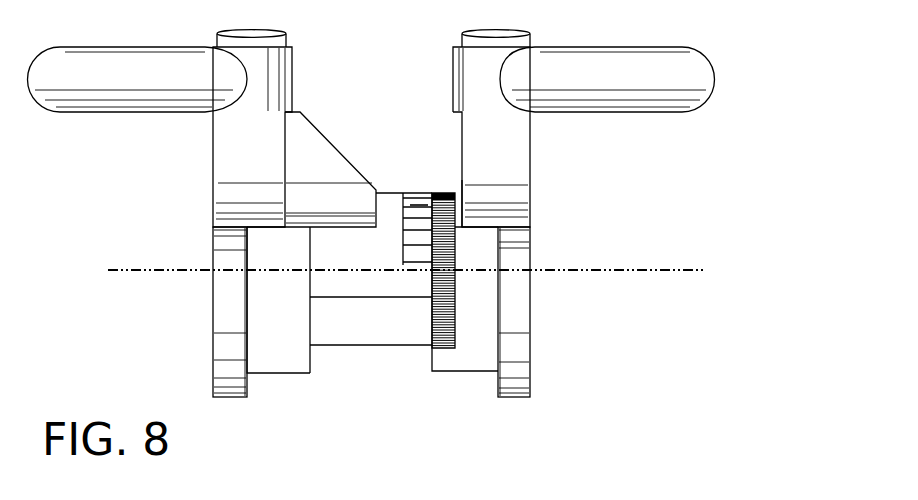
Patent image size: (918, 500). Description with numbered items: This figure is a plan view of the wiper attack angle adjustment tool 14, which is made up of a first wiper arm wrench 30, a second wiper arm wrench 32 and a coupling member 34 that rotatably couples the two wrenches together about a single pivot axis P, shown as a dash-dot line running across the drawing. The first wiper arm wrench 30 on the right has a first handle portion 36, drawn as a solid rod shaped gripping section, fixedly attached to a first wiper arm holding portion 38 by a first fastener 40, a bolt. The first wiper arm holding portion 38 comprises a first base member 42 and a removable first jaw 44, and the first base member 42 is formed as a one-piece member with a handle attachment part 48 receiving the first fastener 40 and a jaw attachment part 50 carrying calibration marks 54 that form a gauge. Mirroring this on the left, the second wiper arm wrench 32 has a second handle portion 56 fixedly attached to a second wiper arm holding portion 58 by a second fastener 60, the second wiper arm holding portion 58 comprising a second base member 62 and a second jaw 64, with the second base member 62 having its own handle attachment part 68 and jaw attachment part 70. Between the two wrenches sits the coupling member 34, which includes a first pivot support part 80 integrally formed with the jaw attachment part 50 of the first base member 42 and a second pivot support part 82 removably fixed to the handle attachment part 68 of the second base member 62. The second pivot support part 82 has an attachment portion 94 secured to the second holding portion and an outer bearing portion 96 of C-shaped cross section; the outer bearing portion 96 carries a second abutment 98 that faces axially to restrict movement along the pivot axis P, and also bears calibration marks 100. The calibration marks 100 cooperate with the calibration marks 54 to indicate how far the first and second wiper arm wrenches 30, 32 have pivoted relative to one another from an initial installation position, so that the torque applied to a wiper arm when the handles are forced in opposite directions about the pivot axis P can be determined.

The wiper attack angle adjustment tool 14 is at (676, 31).
The first wiper arm wrench 30 is at (562, 315).
The second wiper arm wrench 32 is at (186, 343).
The coupling member 34 is at (428, 412).
The first handle portion 36 is at (629, 114).
The first wiper arm holding portion 38 is at (565, 460).
The first fastener 40 is at (503, 29).
The first base member 42 is at (467, 379).
The first jaw 44 is at (516, 402).
The handle attachment part 48 is at (507, 165).
The jaw attachment part 50 is at (482, 238).
The calibration marks 54 is at (437, 192).
The second handle portion 56 is at (95, 114).
The second wiper arm holding portion 58 is at (284, 460).
The second fastener 60 is at (249, 29).
The second base member 62 is at (270, 380).
The second jaw 64 is at (233, 404).
The handle attachment part 68 is at (243, 163).
The jaw attachment part 70 is at (262, 240).
The first pivot support part 80 is at (393, 349).
The second pivot support part 82 is at (353, 302).
The attachment portion 94 is at (320, 158).
The outer bearing portion 96 is at (389, 221).
The second abutment 98 is at (310, 253).
The calibration marks 100 is at (417, 205).
The pivot axis P is at (672, 268).